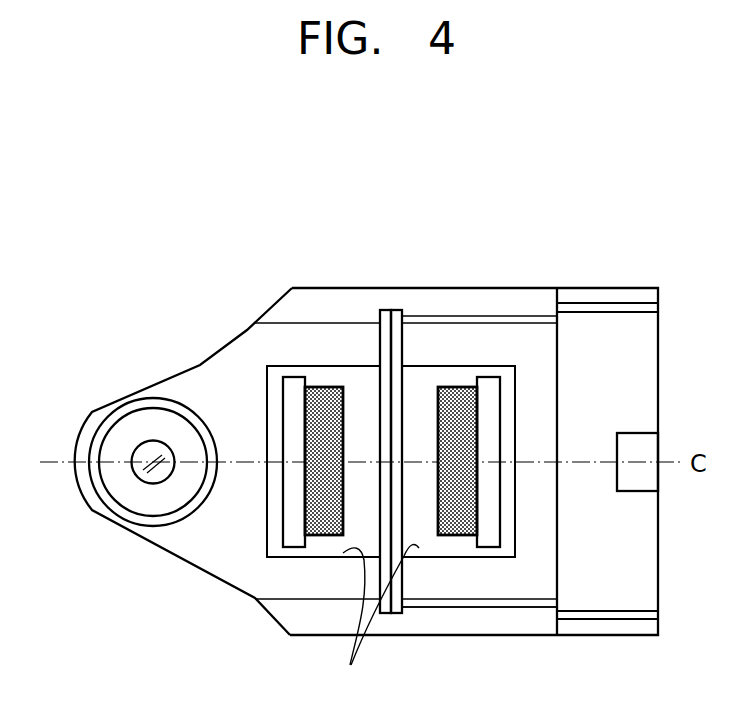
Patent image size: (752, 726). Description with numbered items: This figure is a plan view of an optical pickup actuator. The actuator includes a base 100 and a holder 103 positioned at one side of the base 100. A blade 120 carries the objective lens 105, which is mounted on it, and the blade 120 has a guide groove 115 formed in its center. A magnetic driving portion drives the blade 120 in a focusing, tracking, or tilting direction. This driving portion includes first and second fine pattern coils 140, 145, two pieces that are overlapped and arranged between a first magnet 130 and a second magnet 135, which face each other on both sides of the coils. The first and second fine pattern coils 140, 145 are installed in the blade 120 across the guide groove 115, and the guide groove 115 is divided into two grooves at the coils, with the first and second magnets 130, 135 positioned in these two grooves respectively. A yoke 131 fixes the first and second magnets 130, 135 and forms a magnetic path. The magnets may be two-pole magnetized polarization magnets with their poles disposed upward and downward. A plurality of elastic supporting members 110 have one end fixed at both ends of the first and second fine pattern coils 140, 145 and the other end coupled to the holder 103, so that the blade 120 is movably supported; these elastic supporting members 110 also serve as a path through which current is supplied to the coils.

The base 100 is at (438, 618).
The holder 103 is at (615, 340).
The objective lens 105 is at (147, 452).
The elastic supporting members 110 is at (514, 607).
The guide groove 115 is at (374, 620).
The blade 120 is at (225, 543).
The first magnet 130 is at (322, 385).
The yoke 131 is at (290, 397).
The second magnet 135 is at (460, 387).
The first fine pattern coil 140 is at (380, 310).
The second fine pattern coil 145 is at (397, 318).